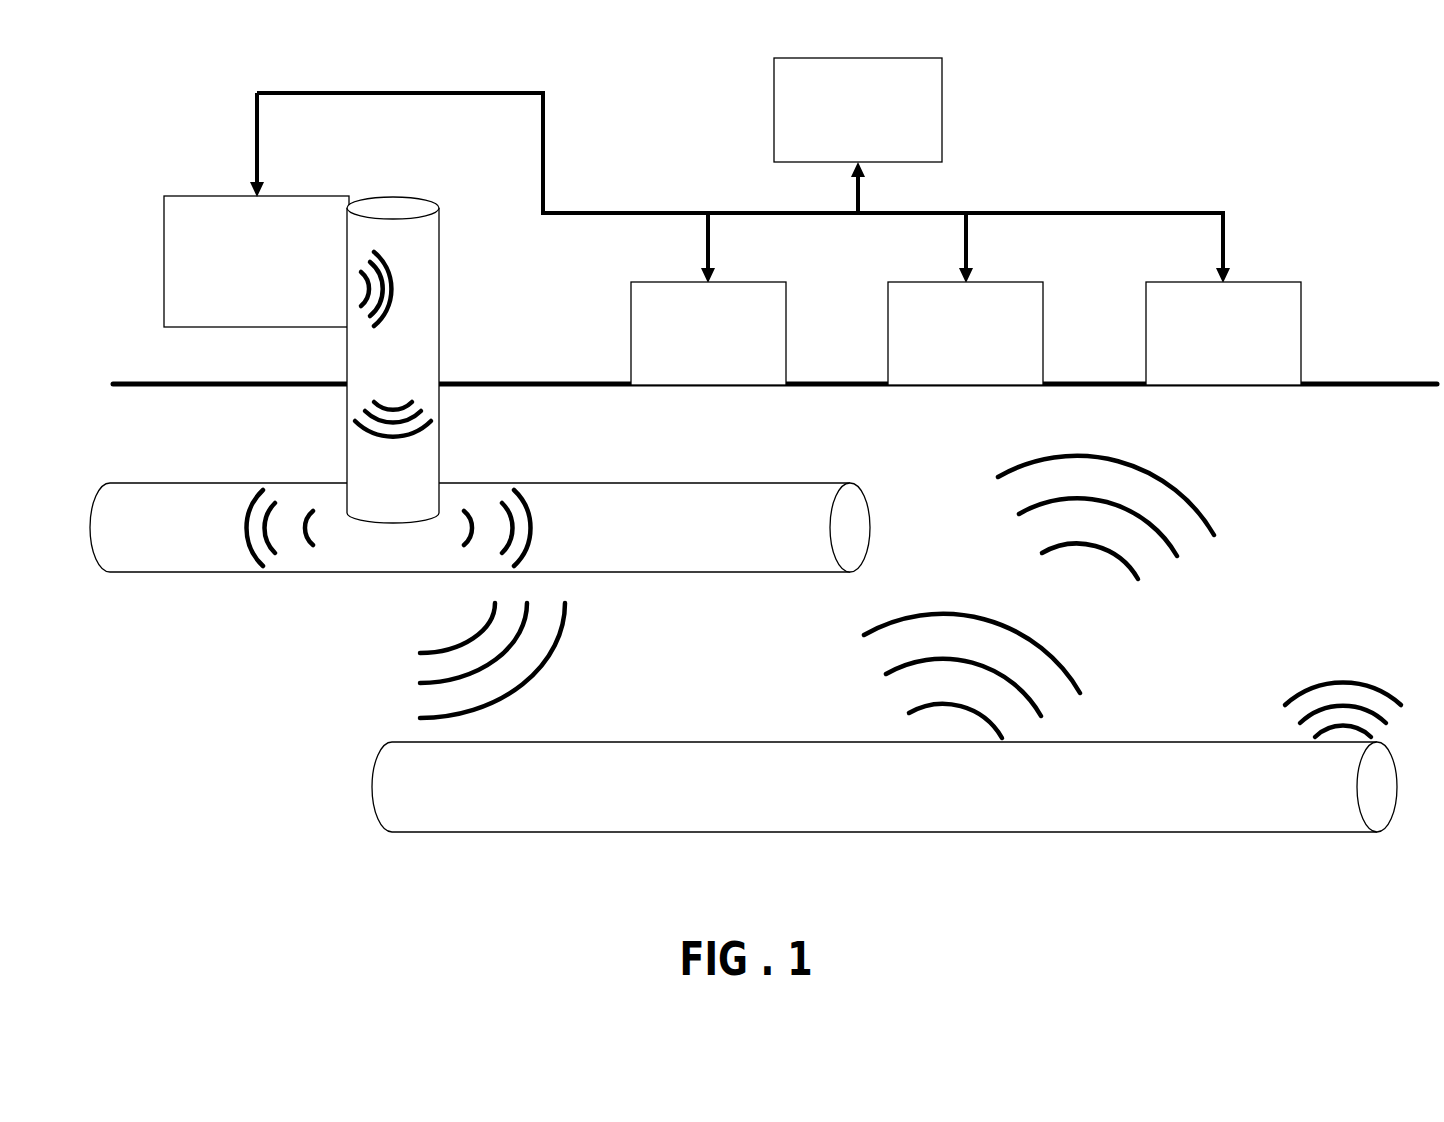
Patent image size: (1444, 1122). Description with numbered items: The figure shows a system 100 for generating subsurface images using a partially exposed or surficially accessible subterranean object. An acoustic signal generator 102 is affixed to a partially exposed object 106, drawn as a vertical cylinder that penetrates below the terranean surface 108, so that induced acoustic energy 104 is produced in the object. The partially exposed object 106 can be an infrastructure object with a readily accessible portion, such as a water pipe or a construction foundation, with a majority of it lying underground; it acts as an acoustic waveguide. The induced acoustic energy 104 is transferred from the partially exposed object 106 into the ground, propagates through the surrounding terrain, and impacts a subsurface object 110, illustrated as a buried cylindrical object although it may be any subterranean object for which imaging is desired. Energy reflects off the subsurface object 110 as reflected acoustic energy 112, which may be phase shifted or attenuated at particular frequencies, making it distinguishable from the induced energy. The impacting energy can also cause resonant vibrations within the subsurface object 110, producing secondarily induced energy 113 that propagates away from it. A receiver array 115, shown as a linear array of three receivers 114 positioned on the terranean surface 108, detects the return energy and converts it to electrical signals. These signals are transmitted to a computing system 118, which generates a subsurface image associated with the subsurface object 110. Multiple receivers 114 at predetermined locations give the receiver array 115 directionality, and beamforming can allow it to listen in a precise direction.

The system 100 is at (213, 101).
The acoustic signal generator 102 is at (256, 261).
The induced acoustic energy 104 is at (396, 248).
The partially exposed object 106 is at (480, 600).
The terranean surface 108 is at (1389, 383).
The subsurface object 110 is at (884, 787).
The reflected acoustic energy 112 is at (1060, 550).
The secondarily induced energy 113 is at (1360, 694).
The receivers 114 is at (966, 333).
The receiver array 115 is at (775, 221).
The computing system 118 is at (858, 110).